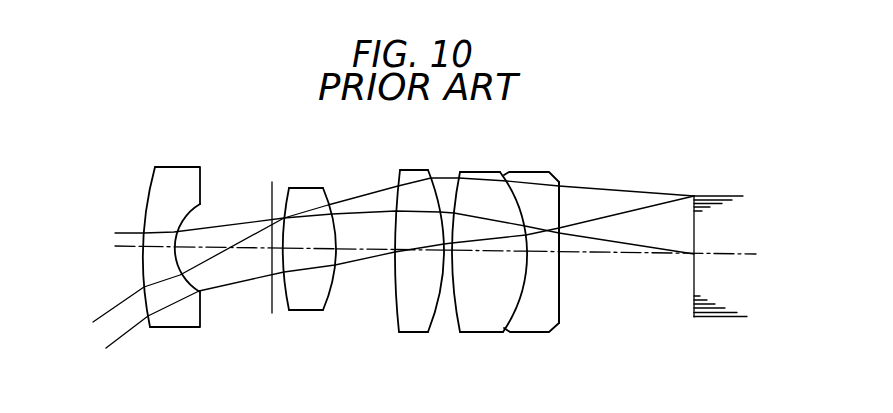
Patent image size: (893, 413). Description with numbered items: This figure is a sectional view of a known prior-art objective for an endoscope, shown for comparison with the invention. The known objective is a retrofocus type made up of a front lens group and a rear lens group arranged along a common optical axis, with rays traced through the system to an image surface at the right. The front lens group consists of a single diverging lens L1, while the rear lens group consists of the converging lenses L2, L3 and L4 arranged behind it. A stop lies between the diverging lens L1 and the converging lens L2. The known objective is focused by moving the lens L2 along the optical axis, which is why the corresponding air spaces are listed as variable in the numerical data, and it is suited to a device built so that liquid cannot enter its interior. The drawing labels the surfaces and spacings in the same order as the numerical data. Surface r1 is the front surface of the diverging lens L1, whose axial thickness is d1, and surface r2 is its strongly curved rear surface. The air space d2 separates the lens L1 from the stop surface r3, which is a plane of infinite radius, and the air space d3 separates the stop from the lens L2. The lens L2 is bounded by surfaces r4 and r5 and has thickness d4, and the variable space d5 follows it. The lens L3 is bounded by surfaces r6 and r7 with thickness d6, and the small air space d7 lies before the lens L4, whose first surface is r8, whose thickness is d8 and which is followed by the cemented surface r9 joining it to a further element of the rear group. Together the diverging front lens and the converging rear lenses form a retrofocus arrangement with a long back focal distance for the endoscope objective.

The diverging lens L1 is at (173, 166).
The converging lens L2 is at (303, 187).
The converging lens L3 is at (412, 169).
The converging lens L4 is at (481, 171).
The lens thickness d1 is at (163, 245).
The air space d2 is at (208, 245).
The air space d3 is at (295, 250).
The lens thickness d4 is at (351, 250).
The variable air space d5 is at (432, 252).
The lens thickness d6 is at (453, 247).
The air space d7 is at (515, 255).
The lens thickness d8 is at (542, 252).
The radius of curvature r1 is at (151, 326).
The radius of curvature r2 is at (201, 300).
The stop surface r3 is at (285, 295).
The radius of curvature r4 is at (328, 301).
The radius of curvature r5 is at (396, 311).
The radius of curvature r6 is at (430, 330).
The radius of curvature r7 is at (457, 327).
The radius of curvature r8 is at (503, 322).
The radius of curvature r9 is at (562, 314).